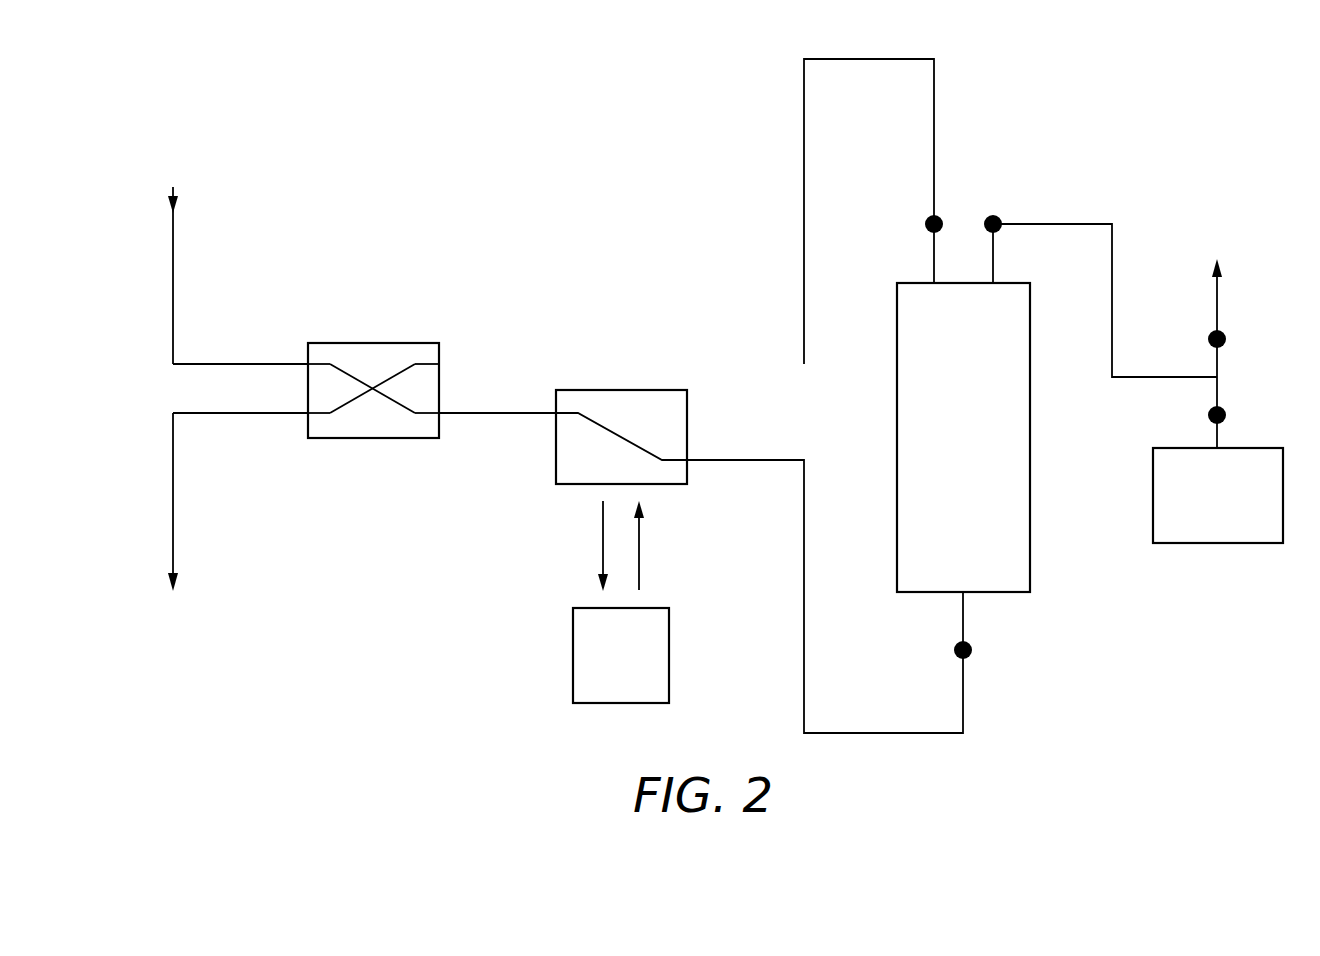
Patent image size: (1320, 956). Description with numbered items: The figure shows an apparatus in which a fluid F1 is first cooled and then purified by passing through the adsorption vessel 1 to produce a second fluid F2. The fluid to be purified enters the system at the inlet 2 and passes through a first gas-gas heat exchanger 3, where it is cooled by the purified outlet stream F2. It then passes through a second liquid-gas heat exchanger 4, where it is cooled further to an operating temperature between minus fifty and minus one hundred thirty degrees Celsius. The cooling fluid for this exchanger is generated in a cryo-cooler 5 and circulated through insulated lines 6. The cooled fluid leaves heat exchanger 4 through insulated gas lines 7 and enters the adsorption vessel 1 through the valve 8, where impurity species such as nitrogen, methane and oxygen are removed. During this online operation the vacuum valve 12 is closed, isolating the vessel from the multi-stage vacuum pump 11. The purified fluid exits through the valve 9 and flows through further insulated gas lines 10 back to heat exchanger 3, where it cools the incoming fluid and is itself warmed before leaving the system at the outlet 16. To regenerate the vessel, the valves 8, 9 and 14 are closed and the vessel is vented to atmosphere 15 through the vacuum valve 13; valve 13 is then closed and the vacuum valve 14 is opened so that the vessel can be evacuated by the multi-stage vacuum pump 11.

The adsorption vessel 1 is at (953, 452).
The inlet 2 is at (173, 222).
The first gas-gas heat exchanger 3 is at (418, 343).
The second liquid-gas heat exchanger 4 is at (556, 466).
The cryo-cooler 5 is at (611, 667).
The insulated lines 6 is at (603, 544).
The insulated gas lines 7 is at (804, 715).
The valve 8 is at (972, 650).
The valve 9 is at (925, 223).
The insulated gas lines 10 is at (804, 70).
The multi-stage vacuum pump 11 is at (1204, 509).
The vacuum valve 12 is at (992, 215).
The vacuum valve 13 is at (1226, 339).
The vacuum valve 14 is at (1226, 415).
The atmosphere 15 is at (1220, 280).
The outlet 16 is at (173, 553).